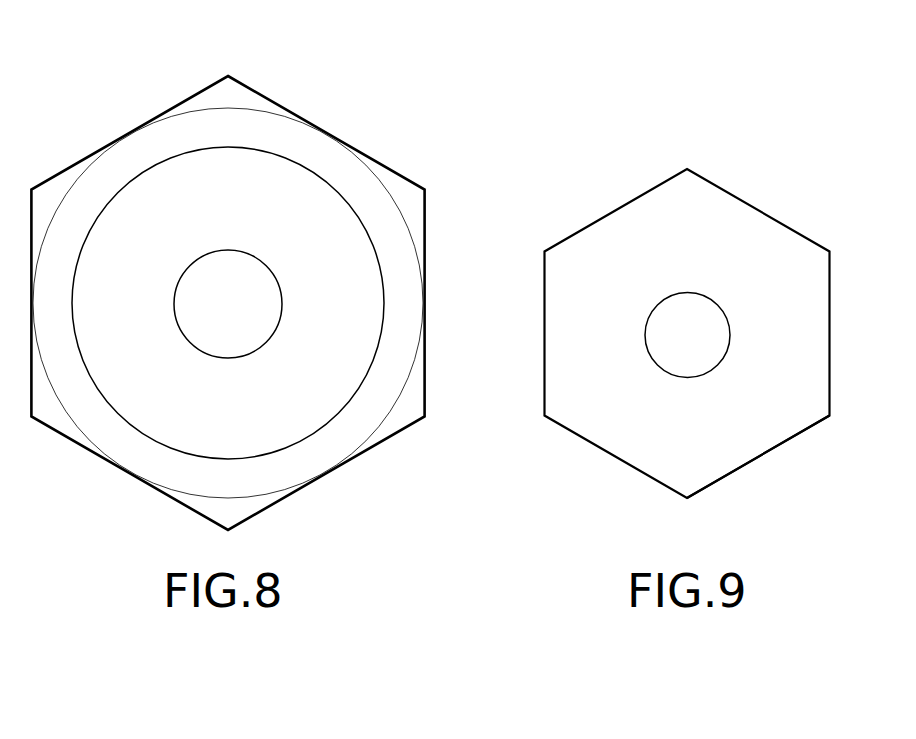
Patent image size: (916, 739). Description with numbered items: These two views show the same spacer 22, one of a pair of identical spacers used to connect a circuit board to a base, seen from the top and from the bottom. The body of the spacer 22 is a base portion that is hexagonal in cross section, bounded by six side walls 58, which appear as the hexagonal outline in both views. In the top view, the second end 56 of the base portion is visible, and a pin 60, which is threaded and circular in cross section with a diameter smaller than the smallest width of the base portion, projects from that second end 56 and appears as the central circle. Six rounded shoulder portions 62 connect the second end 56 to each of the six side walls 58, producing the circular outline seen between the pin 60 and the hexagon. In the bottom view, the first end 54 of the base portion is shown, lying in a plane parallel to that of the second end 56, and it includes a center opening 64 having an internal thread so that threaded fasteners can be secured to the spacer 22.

In FIG. 8, the spacer 22 is at (227, 268).
In FIG. 9, the spacer 22 is at (720, 298).
In FIG. 9, the first end 54 is at (720, 455).
In FIG. 8, the second end 56 is at (162, 413).
In FIG. 8, the side walls 58 is at (143, 126).
In FIG. 9, the side walls 58 is at (829, 374).
In FIG. 8, the pin 60 is at (237, 277).
In FIG. 8, the rounded shoulder portions 62 is at (361, 181).
In FIG. 9, the center opening 64 is at (672, 376).